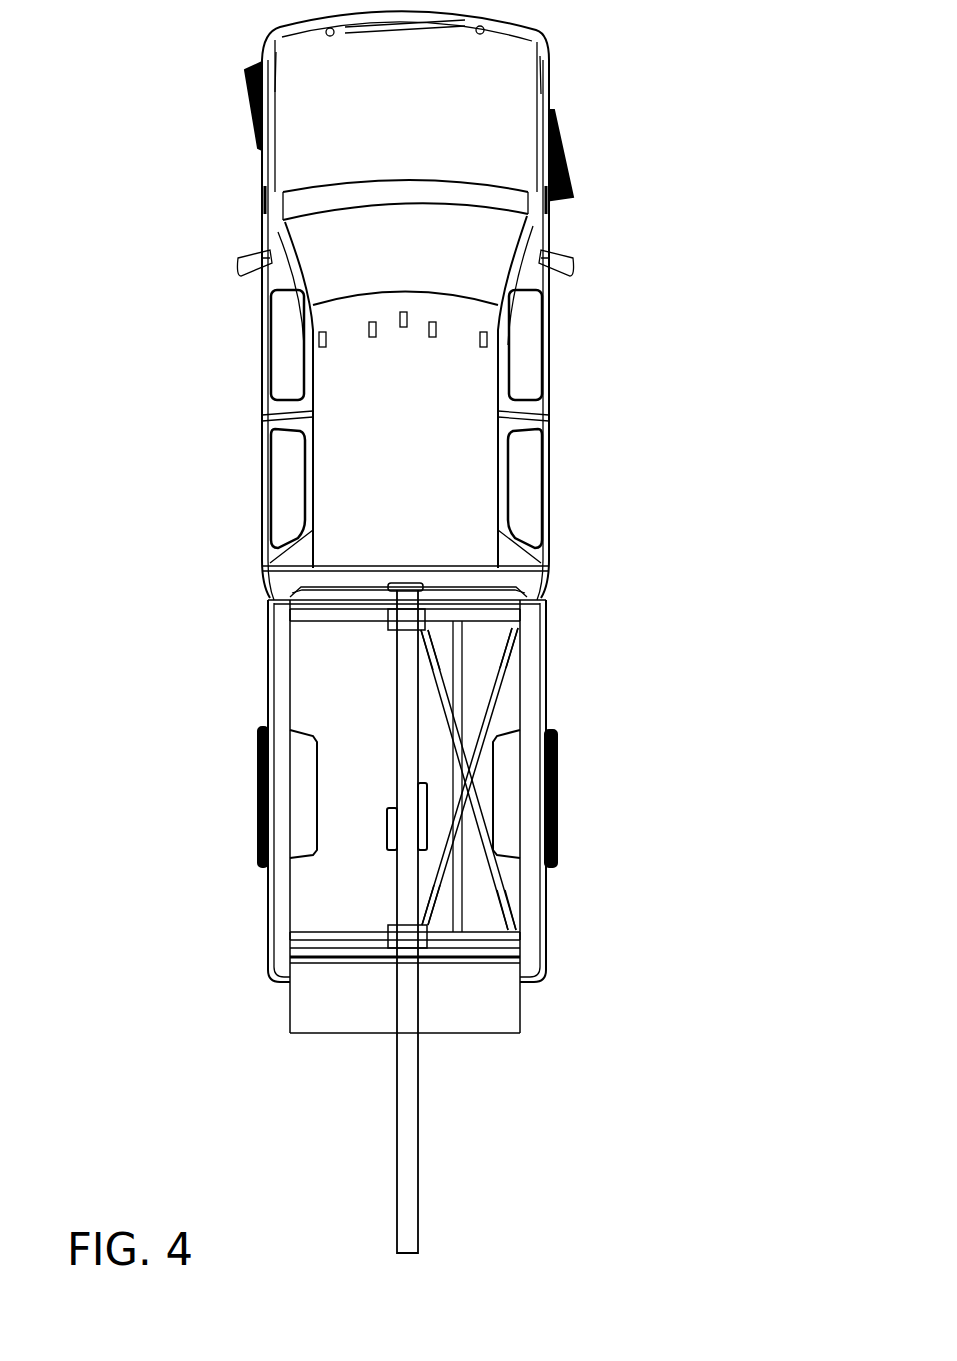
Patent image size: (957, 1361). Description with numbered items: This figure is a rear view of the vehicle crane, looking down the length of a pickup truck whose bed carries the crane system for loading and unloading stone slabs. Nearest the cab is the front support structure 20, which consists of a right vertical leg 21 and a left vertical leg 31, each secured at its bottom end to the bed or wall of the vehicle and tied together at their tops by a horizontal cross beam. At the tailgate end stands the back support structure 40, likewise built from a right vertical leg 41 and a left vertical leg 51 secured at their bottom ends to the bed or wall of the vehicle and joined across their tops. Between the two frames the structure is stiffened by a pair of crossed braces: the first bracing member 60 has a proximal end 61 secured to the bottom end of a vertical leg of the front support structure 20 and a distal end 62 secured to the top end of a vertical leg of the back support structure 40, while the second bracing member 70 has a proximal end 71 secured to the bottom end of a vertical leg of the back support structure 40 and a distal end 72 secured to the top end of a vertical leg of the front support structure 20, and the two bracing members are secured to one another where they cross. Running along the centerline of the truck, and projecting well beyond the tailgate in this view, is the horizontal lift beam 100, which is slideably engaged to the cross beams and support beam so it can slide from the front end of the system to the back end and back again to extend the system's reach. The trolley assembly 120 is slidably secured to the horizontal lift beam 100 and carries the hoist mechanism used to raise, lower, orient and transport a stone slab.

The front support structure 20 is at (298, 620).
The right vertical leg 21 is at (484, 621).
The left vertical leg 31 is at (336, 622).
The back support structure 40 is at (297, 935).
The right vertical leg 41 is at (488, 938).
The left vertical leg 51 is at (338, 938).
The first bracing member 60 is at (499, 693).
The proximal end 61 is at (510, 660).
The distal end 62 is at (436, 900).
The second bracing member 70 is at (502, 871).
The proximal end 71 is at (513, 909).
The distal end 72 is at (433, 651).
The horizontal lift beam 100 is at (408, 1125).
The trolley assembly 120 is at (384, 828).